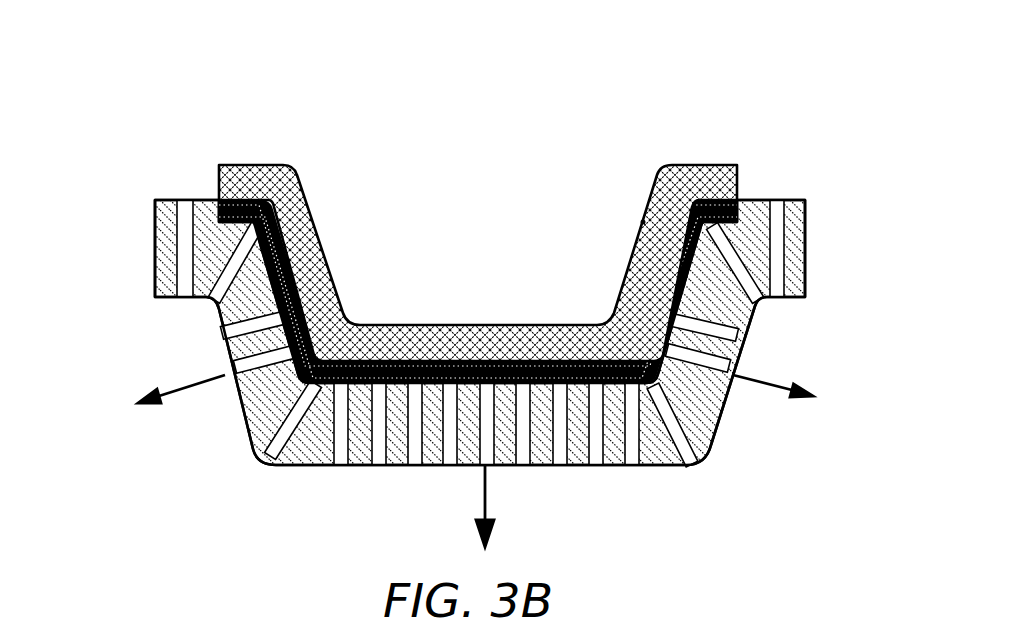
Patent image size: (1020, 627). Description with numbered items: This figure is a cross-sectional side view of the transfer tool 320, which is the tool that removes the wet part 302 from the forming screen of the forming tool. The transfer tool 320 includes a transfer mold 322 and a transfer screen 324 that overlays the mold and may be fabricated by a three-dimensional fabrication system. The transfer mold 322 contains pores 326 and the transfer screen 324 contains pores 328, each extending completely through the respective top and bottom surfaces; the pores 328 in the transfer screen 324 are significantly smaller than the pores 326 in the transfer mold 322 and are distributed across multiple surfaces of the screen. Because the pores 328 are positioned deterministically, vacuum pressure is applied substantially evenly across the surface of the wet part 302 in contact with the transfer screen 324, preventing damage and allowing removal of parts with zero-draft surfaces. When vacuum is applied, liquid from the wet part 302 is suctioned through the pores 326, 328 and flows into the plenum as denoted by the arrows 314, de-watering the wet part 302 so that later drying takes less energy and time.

The wet part 302 is at (478, 206).
The arrows 314 is at (483, 505).
The transfer tool 320 is at (463, 249).
The transfer mold 322 is at (525, 271).
The transfer screen 324 is at (478, 291).
The pores 326 is at (832, 248).
The pores 328 is at (597, 183).